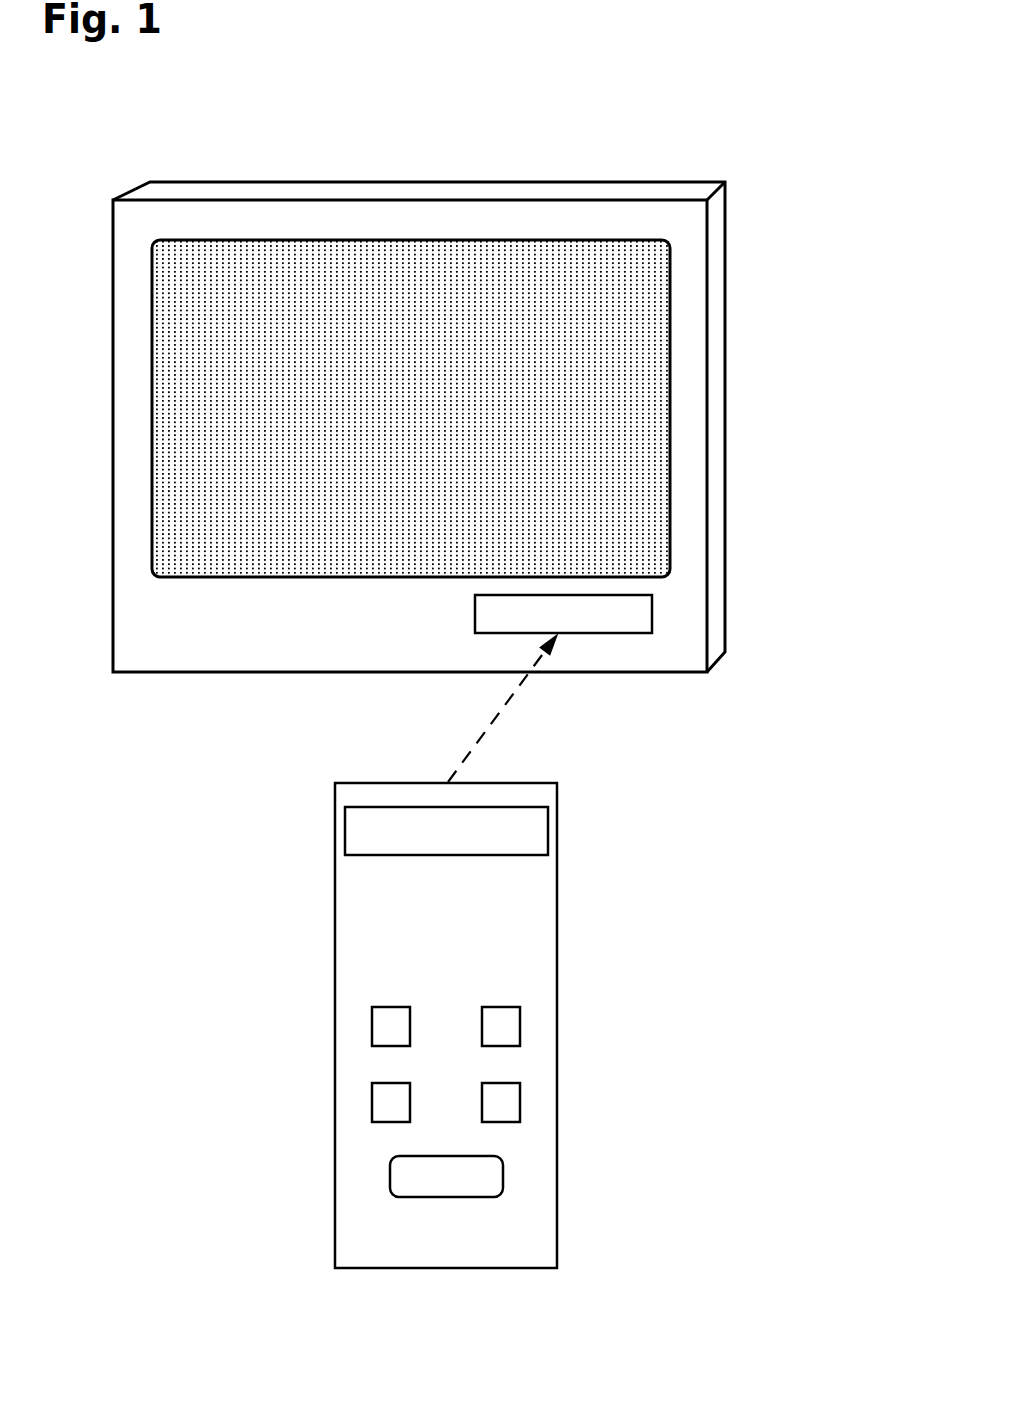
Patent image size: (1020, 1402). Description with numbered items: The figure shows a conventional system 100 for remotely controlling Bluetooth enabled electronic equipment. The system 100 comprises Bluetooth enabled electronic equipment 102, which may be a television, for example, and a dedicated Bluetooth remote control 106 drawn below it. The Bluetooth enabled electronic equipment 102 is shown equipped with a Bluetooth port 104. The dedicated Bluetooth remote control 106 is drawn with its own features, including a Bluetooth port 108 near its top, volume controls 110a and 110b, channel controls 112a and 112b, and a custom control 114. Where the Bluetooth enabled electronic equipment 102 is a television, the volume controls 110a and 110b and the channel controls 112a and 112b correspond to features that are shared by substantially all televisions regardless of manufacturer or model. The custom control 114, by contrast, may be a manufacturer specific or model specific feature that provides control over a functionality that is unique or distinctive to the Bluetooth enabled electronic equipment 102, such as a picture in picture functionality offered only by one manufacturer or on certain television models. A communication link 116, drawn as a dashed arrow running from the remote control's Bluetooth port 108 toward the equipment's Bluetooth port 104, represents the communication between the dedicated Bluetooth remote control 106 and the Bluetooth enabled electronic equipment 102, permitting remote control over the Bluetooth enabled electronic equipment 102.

The system 100 is at (857, 74).
The Bluetooth enabled electronic equipment 102 is at (511, 182).
The Bluetooth port 104 is at (475, 612).
The dedicated Bluetooth remote control 106 is at (393, 1259).
The Bluetooth port 108 is at (540, 837).
The volume control 110a is at (372, 1027).
The volume control 110b is at (372, 1101).
The channel control 112a is at (520, 1027).
The channel control 112b is at (520, 1100).
The custom control 114 is at (463, 1197).
The communication link 116 is at (489, 726).